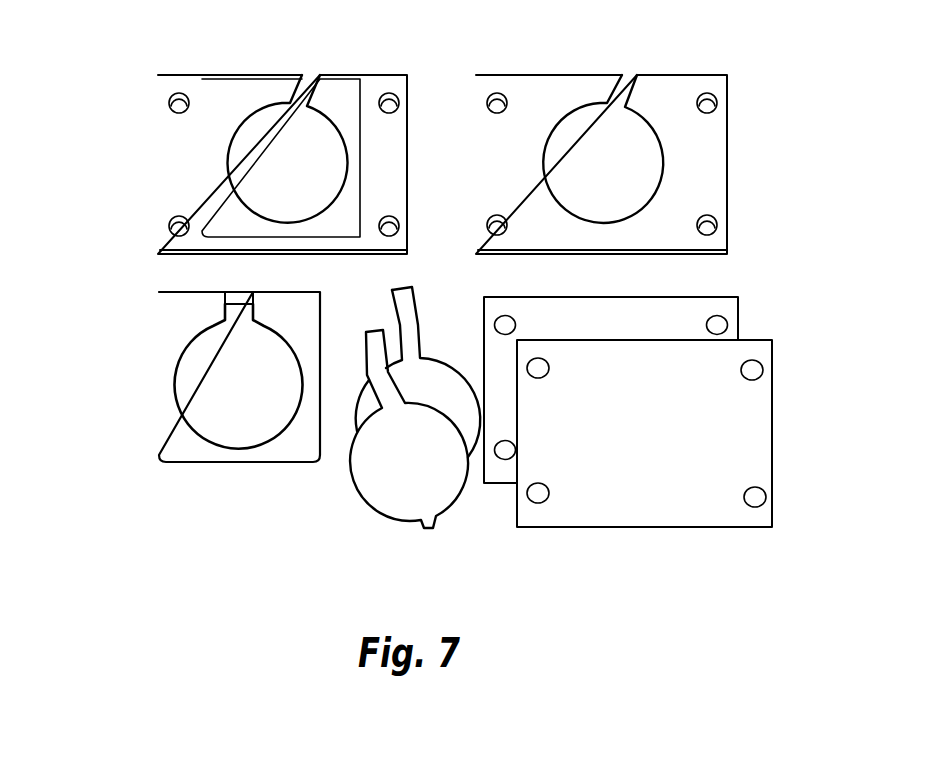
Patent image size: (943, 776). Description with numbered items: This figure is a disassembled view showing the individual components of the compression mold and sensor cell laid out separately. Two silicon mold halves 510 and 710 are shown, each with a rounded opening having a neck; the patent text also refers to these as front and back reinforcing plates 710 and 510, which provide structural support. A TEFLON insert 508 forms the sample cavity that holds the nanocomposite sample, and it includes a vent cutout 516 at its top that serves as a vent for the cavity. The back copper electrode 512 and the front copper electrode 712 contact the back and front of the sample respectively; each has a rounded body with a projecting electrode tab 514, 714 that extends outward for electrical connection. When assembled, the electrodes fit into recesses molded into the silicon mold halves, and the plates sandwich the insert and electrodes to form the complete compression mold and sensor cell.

The TEFLON insert 508 is at (158, 425).
The silicon mold half 510 is at (727, 158).
The back copper electrode 512 is at (738, 318).
The electrode tab 514 is at (414, 287).
The vent cutout 516 is at (237, 292).
The silicon mold half 710 is at (158, 171).
The front copper electrode 712 is at (772, 427).
The electrode tab 714 is at (366, 330).